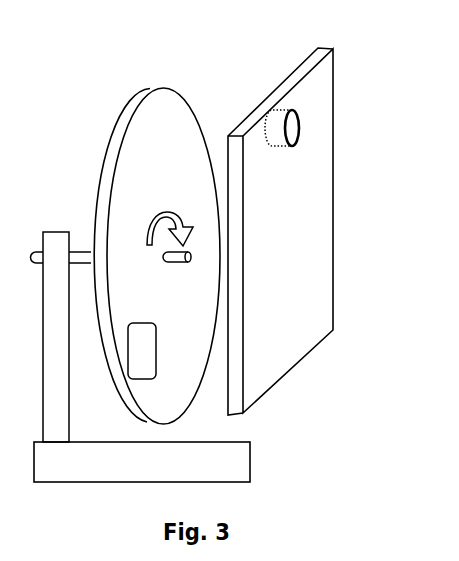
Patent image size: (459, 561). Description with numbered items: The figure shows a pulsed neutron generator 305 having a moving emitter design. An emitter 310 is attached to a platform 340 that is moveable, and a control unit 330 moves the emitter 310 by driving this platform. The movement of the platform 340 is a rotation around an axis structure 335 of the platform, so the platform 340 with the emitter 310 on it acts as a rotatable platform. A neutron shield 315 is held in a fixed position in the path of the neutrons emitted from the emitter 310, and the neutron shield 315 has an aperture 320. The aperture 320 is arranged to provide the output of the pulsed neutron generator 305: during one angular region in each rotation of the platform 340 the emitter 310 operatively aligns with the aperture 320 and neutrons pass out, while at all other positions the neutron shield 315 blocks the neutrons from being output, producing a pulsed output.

The pulsed neutron generator 305 is at (97, 76).
The emitter 310 is at (148, 363).
The neutron shield 315 is at (307, 250).
The aperture 320 is at (297, 128).
The control unit 330 is at (250, 460).
The axis structure 335 is at (191, 259).
The platform 340 is at (100, 207).